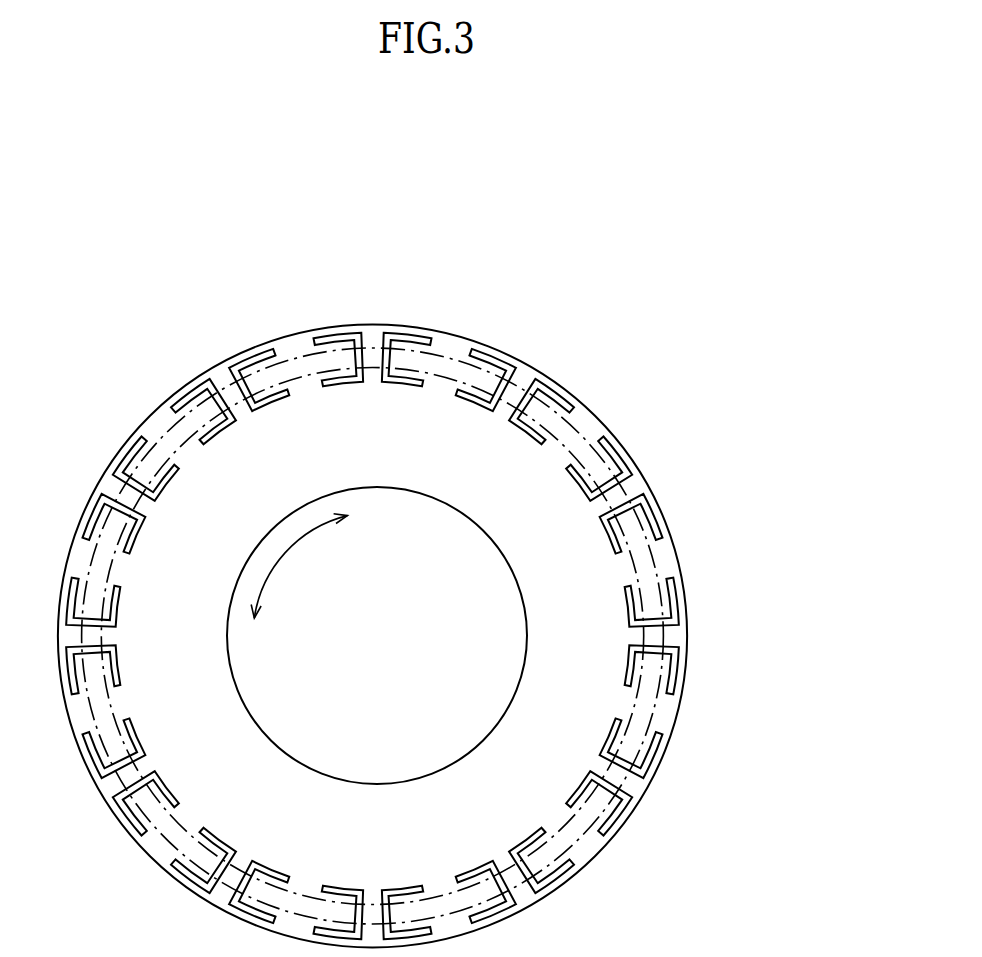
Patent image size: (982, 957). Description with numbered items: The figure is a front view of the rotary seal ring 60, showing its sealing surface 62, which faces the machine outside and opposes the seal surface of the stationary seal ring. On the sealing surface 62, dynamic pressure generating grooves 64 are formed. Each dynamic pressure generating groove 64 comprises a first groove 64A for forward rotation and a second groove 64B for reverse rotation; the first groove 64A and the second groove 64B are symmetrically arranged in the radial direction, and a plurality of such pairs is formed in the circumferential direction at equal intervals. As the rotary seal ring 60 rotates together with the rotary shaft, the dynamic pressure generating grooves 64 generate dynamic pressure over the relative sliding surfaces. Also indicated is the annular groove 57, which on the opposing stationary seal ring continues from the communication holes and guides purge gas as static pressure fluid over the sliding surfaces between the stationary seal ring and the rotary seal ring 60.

The rotary seal ring 60 is at (643, 337).
The sealing surface 62 is at (661, 553).
The dynamic pressure generating groove 64 is at (732, 636).
The first groove 64A is at (673, 605).
The second groove 64B is at (673, 657).
The annular groove 57 is at (578, 830).